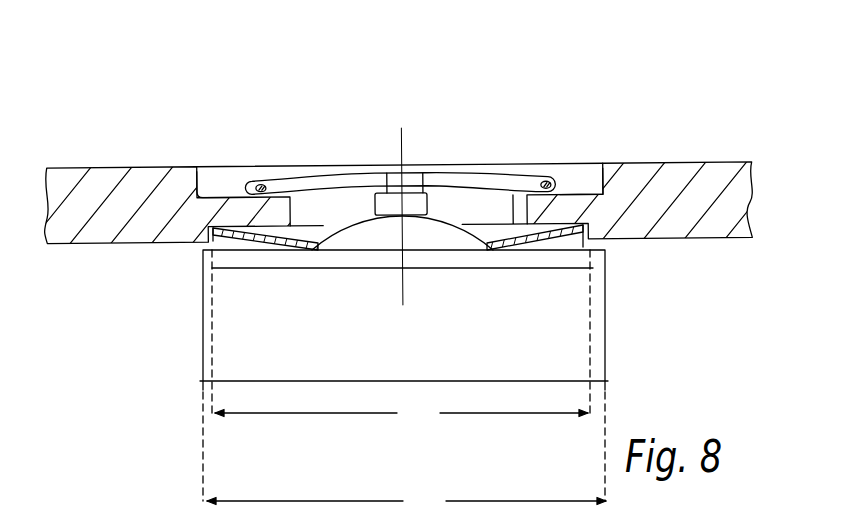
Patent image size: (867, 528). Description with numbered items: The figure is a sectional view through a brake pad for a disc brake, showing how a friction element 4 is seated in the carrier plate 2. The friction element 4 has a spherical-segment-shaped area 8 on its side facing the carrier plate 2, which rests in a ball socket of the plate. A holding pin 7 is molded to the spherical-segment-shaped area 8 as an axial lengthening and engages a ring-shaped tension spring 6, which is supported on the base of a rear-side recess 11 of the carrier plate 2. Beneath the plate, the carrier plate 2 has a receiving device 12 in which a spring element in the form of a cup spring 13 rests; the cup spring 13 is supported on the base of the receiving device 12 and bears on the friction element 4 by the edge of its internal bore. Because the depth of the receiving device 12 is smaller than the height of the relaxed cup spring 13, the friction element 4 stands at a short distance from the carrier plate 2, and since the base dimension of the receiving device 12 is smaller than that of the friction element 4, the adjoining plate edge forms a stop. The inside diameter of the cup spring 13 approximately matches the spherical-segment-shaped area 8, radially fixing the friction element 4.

The carrier plate 2 is at (667, 188).
The housing 4 is at (297, 348).
The ring-shaped tension spring 6 is at (282, 188).
The holding pin 7 is at (413, 190).
The spherical-segment-shaped area 8 is at (433, 236).
The rear-side recess 11 is at (207, 182).
The receiving device 12 is at (487, 233).
The cup spring 13 is at (256, 244).